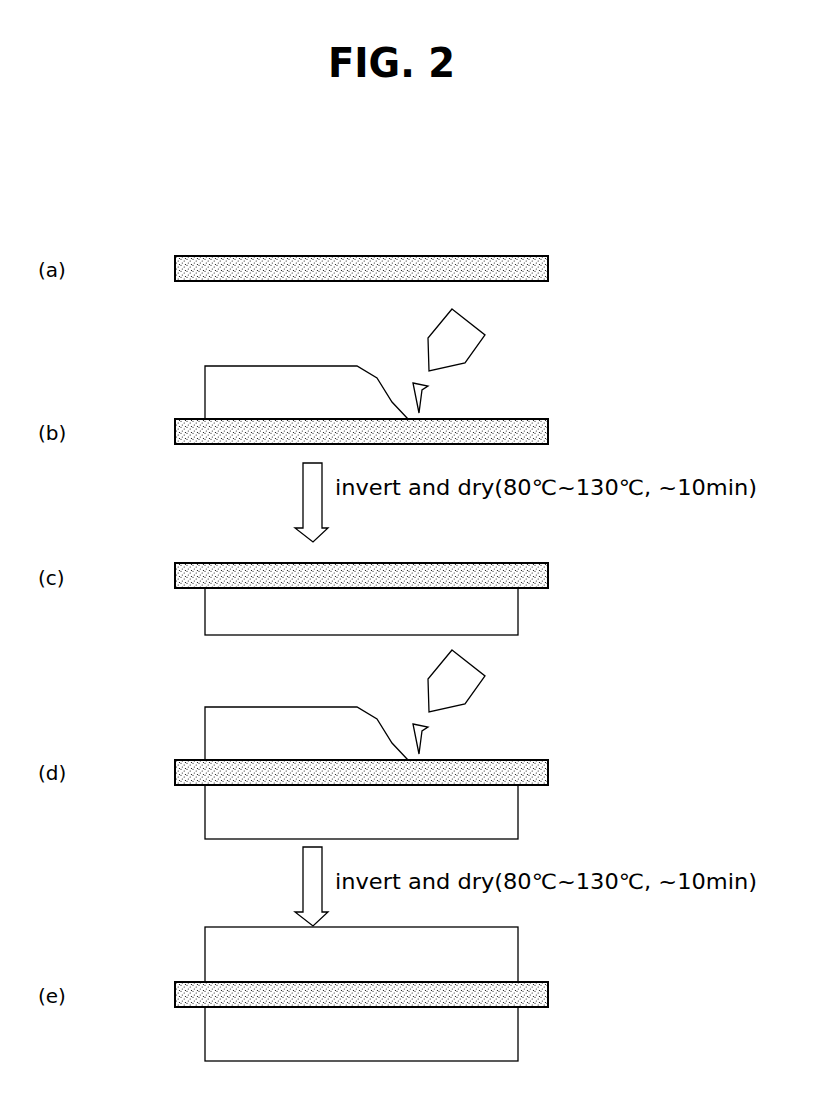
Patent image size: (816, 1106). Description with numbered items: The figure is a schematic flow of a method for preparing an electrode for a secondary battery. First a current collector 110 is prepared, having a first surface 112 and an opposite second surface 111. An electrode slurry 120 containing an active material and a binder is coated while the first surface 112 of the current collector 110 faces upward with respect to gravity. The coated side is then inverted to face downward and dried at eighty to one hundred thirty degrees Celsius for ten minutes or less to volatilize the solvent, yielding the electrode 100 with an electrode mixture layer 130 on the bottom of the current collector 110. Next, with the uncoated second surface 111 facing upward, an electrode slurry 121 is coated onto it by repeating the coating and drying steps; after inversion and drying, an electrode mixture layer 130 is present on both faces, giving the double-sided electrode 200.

The electrode 100 is at (196, 549).
The current collector 110 is at (408, 604).
The second surface 111 is at (533, 282).
The first surface 112 is at (500, 255).
The electrode slurry 120 is at (424, 391).
The electrode slurry 121 is at (424, 732).
The electrode mixture layer 130 is at (518, 615).
The electrode 200 is at (177, 949).